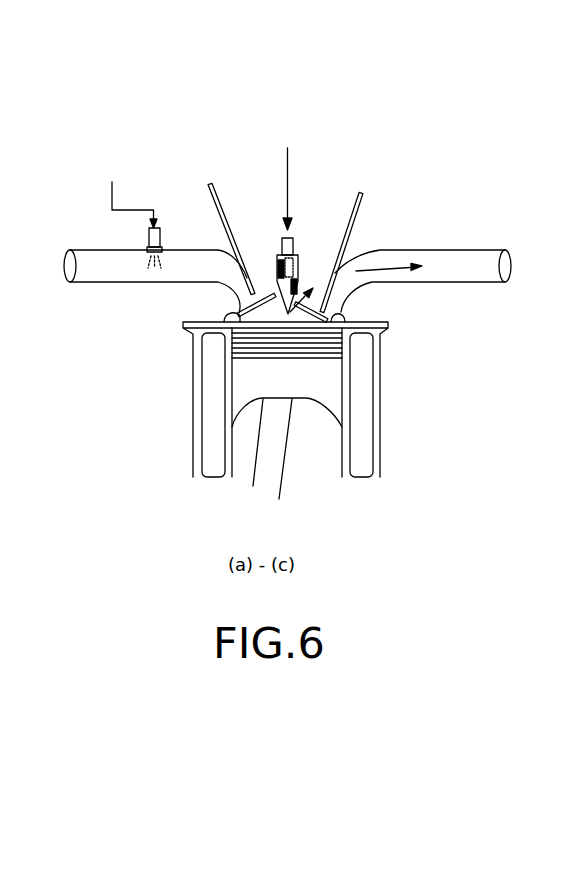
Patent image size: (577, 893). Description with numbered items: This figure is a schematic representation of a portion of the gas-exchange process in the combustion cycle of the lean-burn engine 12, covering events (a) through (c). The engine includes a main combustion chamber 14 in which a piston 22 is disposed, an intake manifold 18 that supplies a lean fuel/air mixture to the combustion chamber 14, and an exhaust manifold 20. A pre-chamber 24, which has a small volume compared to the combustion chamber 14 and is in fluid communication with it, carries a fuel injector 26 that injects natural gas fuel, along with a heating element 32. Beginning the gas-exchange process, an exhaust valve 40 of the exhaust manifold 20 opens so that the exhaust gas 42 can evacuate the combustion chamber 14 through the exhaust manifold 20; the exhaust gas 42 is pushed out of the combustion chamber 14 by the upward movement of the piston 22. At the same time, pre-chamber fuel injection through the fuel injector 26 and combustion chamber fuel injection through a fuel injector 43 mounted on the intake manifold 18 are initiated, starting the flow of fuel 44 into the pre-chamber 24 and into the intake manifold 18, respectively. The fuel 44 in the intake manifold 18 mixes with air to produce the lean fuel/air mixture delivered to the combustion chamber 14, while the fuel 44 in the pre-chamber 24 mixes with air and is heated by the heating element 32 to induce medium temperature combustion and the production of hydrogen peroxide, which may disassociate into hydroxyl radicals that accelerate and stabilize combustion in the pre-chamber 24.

The lean-burn engine 12 is at (479, 144).
The main combustion chamber 14 is at (236, 312).
The intake manifold 18 is at (132, 283).
The exhaust manifold 20 is at (468, 250).
The piston 22 is at (333, 385).
The pre-chamber 24 is at (245, 258).
The fuel injector 26 is at (295, 253).
The heating element 32 is at (276, 265).
The exhaust valve 40 is at (347, 313).
The exhaust gas 42 is at (402, 250).
The fuel injector 43 is at (162, 234).
The fuel 44 is at (163, 251).